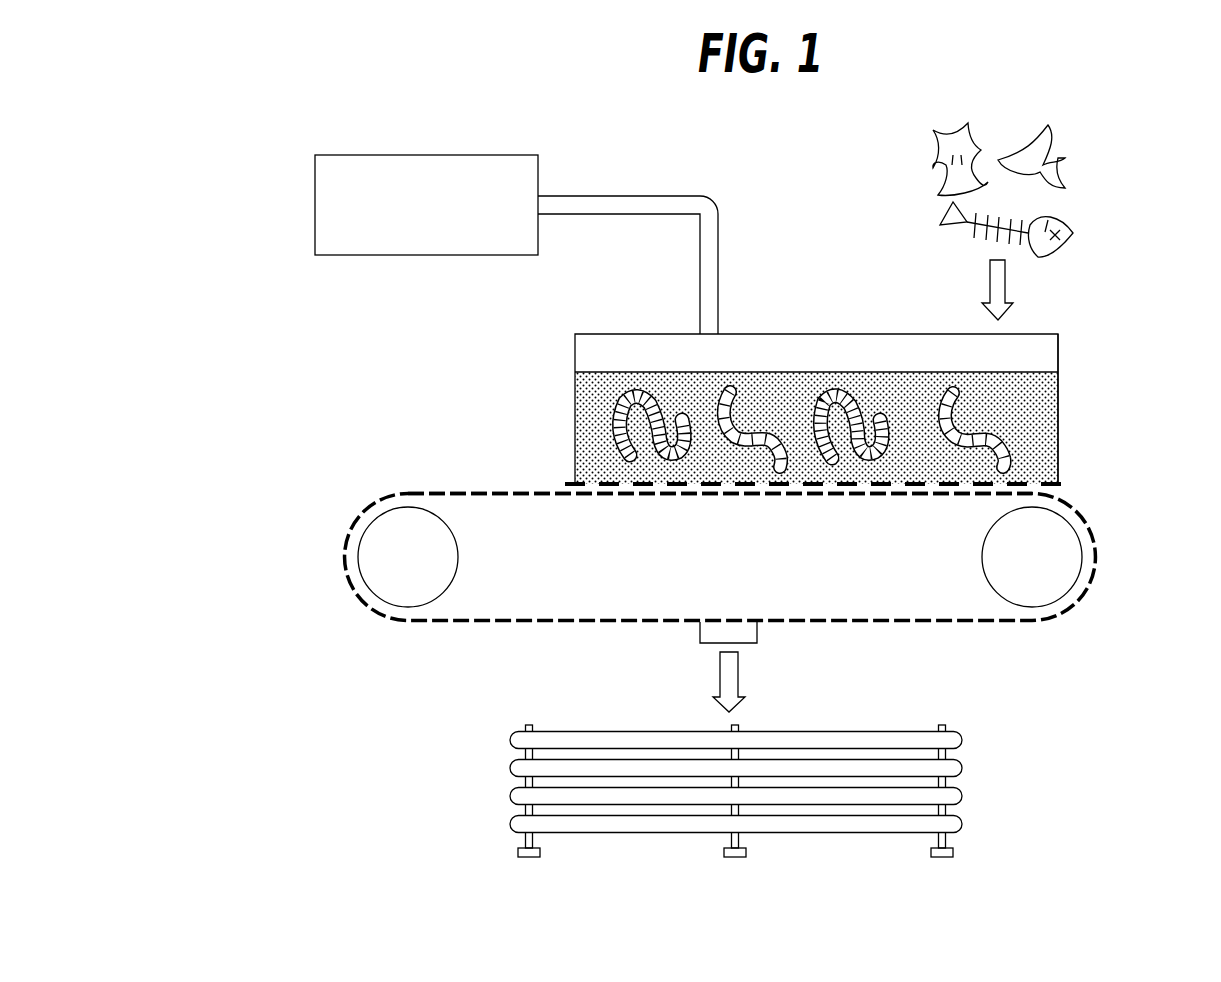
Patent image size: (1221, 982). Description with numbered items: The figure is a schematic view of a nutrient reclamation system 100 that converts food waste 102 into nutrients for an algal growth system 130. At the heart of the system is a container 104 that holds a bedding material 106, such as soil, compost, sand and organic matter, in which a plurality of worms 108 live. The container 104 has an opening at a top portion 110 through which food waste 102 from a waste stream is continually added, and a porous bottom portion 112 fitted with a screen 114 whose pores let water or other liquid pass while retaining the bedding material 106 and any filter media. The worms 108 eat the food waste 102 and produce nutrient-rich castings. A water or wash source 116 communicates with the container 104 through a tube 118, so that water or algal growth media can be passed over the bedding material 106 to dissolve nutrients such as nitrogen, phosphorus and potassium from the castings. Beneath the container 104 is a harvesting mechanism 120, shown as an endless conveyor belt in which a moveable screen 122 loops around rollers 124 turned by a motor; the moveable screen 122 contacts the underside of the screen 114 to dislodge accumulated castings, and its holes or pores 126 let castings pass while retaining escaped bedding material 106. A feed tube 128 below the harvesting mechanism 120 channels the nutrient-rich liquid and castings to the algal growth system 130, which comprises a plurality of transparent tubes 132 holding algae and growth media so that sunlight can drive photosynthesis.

The nutrient reclamation system 100 is at (303, 72).
The food waste 102 is at (1105, 135).
The container 104 is at (1060, 420).
The bedding material 106 is at (1030, 392).
The worms 108 is at (610, 437).
The top portion 110 is at (1033, 333).
The bottom portion 112 is at (1062, 479).
The screen 114 is at (1062, 487).
The water or wash source 116 is at (505, 155).
The tube 118 is at (652, 196).
The harvesting mechanism 120 is at (745, 567).
The moveable screen 122 is at (1098, 548).
The rollers 124 is at (437, 550).
The holes or pores 126 is at (1000, 627).
The feed tube 128 is at (757, 631).
The algal growth system 130 is at (962, 824).
The tubes 132 is at (800, 798).